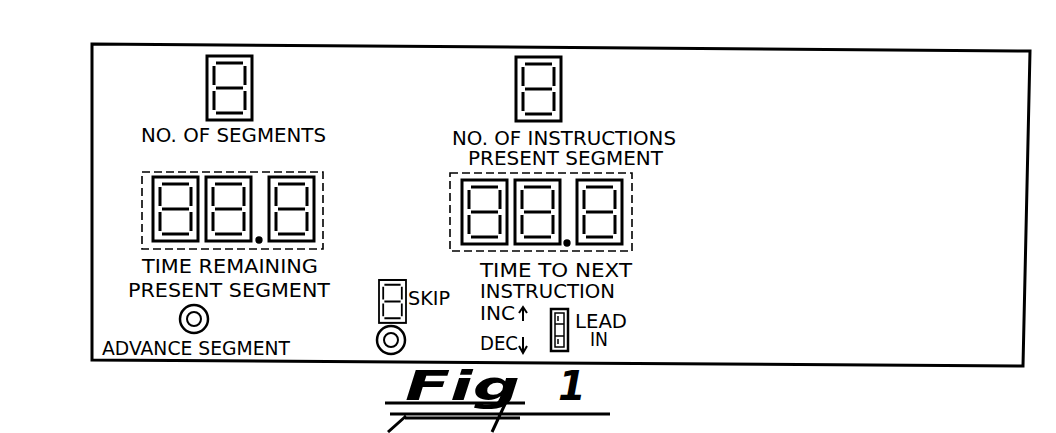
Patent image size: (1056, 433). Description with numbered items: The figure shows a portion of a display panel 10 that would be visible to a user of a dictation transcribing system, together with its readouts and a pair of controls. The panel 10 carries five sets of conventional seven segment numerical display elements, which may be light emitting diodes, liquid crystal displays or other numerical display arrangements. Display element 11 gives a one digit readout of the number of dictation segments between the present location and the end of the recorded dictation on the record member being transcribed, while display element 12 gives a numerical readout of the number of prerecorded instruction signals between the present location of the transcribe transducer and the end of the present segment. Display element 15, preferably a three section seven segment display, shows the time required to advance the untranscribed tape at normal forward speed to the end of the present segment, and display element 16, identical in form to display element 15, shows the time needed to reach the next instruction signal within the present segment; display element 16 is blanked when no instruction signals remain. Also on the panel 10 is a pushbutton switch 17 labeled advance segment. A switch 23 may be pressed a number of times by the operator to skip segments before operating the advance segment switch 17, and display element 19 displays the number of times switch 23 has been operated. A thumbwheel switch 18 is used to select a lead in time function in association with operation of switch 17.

The display panel 10 is at (92, 134).
The display element 11 is at (253, 92).
The display element 12 is at (563, 90).
The display element 15 is at (324, 194).
The display element 16 is at (633, 207).
The pushbutton switch 17 is at (208, 318).
The thumbwheel switch 18 is at (568, 348).
The display element 19 is at (392, 280).
The switch 23 is at (405, 338).